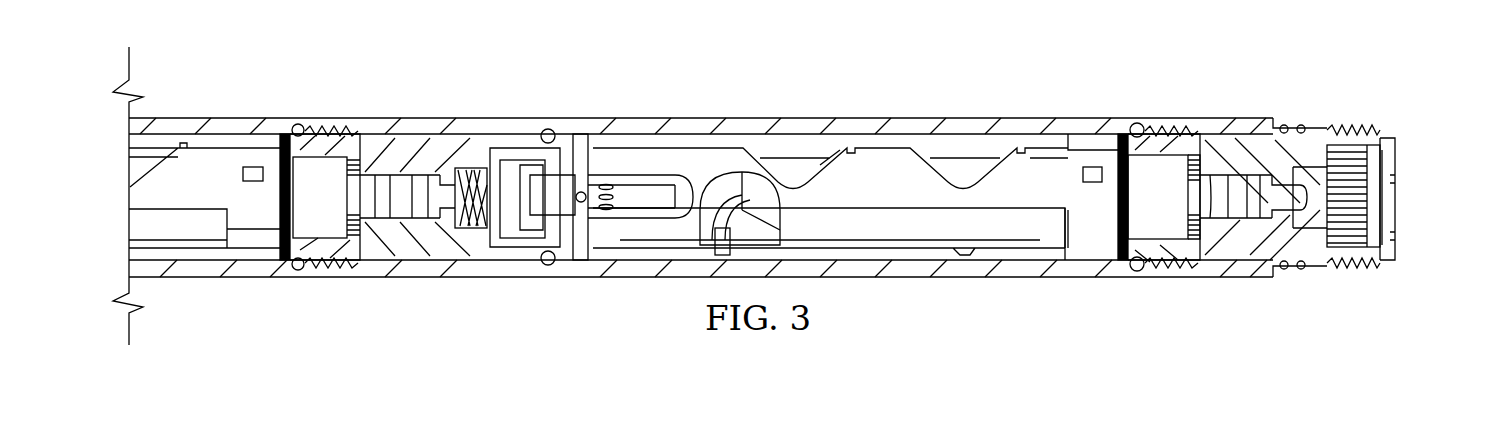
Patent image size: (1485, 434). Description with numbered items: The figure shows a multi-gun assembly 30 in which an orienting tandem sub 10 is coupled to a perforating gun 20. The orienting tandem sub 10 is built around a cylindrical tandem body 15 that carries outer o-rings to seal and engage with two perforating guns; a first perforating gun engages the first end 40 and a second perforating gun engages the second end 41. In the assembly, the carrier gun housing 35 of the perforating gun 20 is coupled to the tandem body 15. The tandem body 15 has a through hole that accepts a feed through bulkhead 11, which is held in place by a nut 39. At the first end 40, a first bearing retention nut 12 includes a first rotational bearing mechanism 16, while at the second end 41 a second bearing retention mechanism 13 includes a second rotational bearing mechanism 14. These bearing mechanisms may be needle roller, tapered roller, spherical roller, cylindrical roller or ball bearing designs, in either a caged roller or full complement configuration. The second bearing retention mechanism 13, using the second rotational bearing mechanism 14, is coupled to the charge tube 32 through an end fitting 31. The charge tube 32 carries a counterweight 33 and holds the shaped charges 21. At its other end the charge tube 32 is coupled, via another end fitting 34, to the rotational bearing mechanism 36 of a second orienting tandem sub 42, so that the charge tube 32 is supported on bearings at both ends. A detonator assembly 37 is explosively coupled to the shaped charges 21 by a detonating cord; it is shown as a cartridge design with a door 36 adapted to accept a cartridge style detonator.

The orienting tandem sub 10 is at (1263, 281).
The feed through bulkhead 11 is at (1243, 175).
The first bearing retention nut 12 is at (1388, 252).
The second bearing retention mechanism 13 is at (1138, 268).
The second rotational bearing mechanism 14 is at (1205, 198).
The tandem body 15 is at (1160, 128).
The first rotational bearing mechanism 16 is at (1352, 203).
The perforating gun 20 is at (800, 140).
The shaped charges 21 is at (960, 165).
The multi-gun assembly 30 is at (382, 87).
The end fitting 31 is at (1140, 178).
The charge tube 32 is at (893, 195).
The counterweight 33 is at (1023, 218).
The end fitting 34 is at (565, 238).
The carrier gun housing 35 is at (680, 128).
The rotational bearing mechanism 36 is at (505, 132).
The detonator assembly 37 is at (638, 195).
The nut 39 is at (1212, 238).
The first end 40 is at (1393, 128).
The second end 41 is at (1143, 125).
The second orienting tandem sub 42 is at (420, 262).